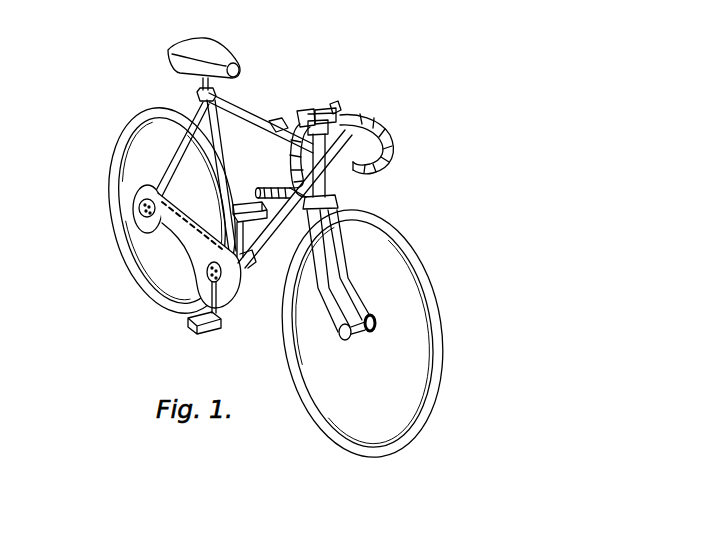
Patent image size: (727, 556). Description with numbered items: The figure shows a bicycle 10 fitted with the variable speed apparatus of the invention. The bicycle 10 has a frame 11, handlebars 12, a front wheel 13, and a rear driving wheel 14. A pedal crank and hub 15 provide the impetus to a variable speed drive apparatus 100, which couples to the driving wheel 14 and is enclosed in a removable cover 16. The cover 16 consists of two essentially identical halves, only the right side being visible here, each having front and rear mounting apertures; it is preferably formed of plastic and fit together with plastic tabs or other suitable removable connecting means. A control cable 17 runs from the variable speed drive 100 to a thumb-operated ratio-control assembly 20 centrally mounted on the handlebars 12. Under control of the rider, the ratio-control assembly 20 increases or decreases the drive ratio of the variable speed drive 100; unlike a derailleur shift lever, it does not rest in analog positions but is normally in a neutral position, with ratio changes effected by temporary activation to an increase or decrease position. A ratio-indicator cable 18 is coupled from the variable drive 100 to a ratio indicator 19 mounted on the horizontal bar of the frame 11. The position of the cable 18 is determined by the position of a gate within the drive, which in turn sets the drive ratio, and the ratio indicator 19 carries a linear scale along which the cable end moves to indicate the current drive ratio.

The bicycle 10 is at (221, 56).
The frame 11 is at (245, 112).
The handlebars 12 is at (306, 111).
The front wheel 13 is at (398, 248).
The rear driving wheel 14 is at (123, 135).
The pedal crank and hub 15 is at (190, 318).
The removable cover 16 is at (136, 212).
The control cable 17 is at (342, 156).
The ratio-indicator cable 18 is at (256, 193).
The ratio indicator 19 is at (278, 116).
The ratio-control assembly 20 is at (336, 102).
The variable speed drive apparatus 100 is at (227, 297).